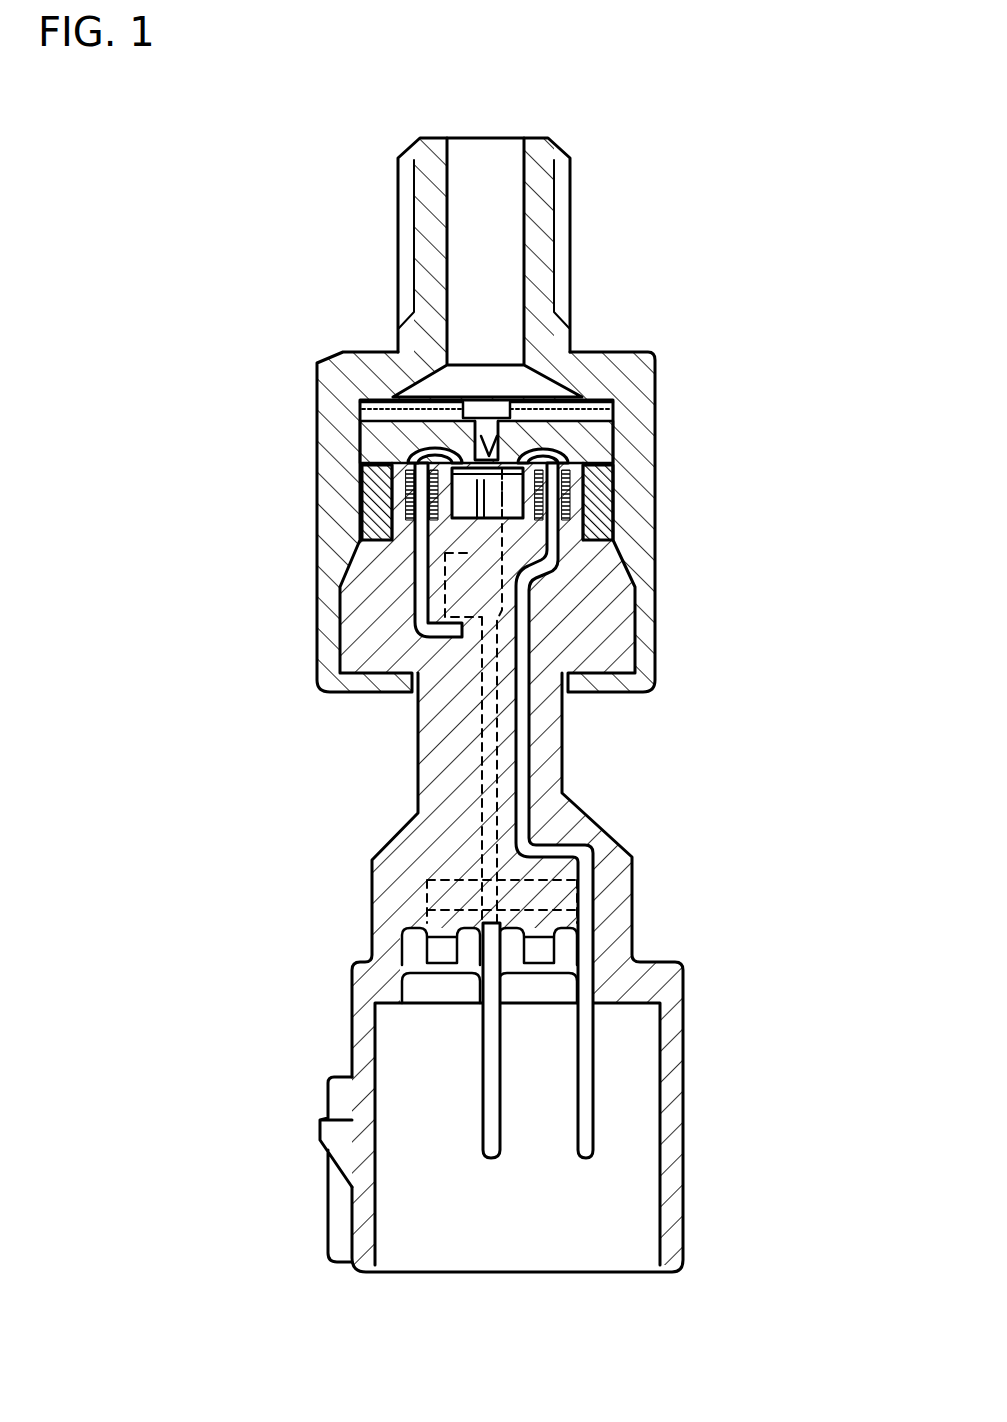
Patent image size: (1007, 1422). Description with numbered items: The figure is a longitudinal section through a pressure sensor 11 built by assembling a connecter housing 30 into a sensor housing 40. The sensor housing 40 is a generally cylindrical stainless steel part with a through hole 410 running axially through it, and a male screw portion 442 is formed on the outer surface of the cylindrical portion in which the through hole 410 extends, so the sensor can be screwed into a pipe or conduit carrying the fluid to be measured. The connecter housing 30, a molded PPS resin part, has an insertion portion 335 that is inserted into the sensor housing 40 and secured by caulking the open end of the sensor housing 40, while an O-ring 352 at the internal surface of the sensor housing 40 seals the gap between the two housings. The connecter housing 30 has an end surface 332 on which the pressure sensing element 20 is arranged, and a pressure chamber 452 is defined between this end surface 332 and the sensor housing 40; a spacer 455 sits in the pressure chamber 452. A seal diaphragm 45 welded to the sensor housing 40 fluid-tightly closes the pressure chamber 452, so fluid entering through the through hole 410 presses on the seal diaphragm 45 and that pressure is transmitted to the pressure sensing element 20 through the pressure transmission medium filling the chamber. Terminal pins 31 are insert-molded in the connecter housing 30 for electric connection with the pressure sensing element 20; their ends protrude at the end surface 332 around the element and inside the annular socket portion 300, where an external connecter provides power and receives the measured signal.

The pressure sensor 11 is at (624, 140).
The through hole 410 is at (480, 173).
The male screw portion 442 is at (410, 208).
The sensor housing 40 is at (343, 382).
The spacer 455 is at (383, 443).
The pressure chamber 452 is at (615, 437).
The seal diaphragm 45 is at (490, 426).
The end surface 332 is at (516, 443).
The insertion portion 335 is at (600, 632).
The O-ring 352 is at (385, 517).
The pressure sensing element 20 is at (485, 513).
The connecter housing 30 is at (403, 857).
The socket portion 300 is at (325, 1173).
The terminal pins 31 is at (492, 1160).